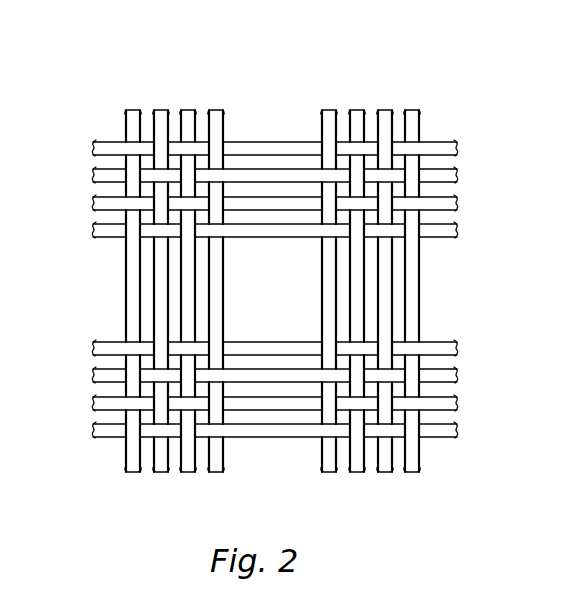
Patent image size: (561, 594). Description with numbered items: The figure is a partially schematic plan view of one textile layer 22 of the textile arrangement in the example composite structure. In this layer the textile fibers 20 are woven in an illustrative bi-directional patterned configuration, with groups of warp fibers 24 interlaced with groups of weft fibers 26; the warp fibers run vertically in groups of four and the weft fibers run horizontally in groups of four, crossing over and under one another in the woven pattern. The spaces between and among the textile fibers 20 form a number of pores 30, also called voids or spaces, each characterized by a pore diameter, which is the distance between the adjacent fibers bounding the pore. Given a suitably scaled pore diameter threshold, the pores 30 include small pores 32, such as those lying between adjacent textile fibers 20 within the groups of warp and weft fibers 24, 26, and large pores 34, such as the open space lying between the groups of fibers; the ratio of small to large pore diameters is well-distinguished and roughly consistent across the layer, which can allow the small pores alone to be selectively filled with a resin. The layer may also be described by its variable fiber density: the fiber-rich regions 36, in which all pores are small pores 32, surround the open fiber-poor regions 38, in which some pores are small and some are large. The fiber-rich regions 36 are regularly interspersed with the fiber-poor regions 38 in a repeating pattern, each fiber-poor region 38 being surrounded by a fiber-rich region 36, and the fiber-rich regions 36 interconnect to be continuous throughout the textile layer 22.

The textile fibers 20 is at (284, 288).
The textile layer 22 is at (213, 482).
The warp fibers 24 is at (307, 280).
The weft fibers 26 is at (306, 318).
The pores 30 is at (460, 162).
The small pores 32 is at (461, 389).
The large pores 34 is at (254, 313).
The fiber-rich region 36 is at (230, 131).
The fiber-poor region 38 is at (263, 124).